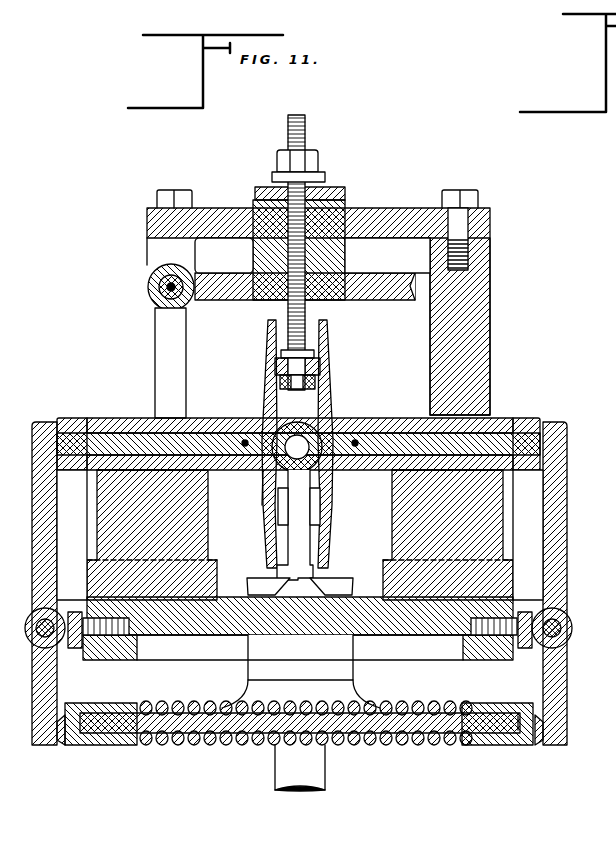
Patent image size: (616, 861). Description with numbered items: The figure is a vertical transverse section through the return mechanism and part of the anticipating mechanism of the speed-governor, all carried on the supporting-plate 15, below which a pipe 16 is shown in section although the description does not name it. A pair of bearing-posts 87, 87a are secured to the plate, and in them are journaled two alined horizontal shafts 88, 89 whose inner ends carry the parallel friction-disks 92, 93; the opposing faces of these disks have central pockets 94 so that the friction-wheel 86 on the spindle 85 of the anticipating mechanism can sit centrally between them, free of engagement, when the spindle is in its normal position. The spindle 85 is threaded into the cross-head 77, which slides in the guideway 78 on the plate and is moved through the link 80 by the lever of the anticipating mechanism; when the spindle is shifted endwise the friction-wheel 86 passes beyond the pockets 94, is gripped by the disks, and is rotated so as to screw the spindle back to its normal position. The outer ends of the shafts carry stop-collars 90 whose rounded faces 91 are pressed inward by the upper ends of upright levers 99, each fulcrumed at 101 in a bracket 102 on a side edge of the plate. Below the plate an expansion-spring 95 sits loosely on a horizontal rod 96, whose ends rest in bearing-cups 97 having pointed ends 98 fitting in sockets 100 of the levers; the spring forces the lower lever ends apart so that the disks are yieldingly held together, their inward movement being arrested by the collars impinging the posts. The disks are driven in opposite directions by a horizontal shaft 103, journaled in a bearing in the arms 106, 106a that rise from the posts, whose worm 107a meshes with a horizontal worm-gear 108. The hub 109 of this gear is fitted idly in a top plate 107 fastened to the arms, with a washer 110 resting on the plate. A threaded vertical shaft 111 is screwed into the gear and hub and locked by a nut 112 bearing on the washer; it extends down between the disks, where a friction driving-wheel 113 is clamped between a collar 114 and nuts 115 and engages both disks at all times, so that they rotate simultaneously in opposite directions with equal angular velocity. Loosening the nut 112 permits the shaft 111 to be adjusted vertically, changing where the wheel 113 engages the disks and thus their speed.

The supporting-plate 15 is at (410, 636).
The pipe 16 is at (312, 778).
The cross-head 77 is at (308, 538).
The guideway 78 is at (258, 582).
The link 80 is at (283, 508).
The spindle 85 is at (300, 420).
The friction-wheel 86 is at (265, 470).
The bearing-post 87 is at (490, 526).
The bearing-post 87a is at (122, 512).
The horizontal shaft 88 is at (497, 418).
The horizontal shaft 89 is at (122, 418).
The stop-collar 90 is at (72, 418).
The rounded end 91 is at (44, 420).
The friction-disk 92 is at (340, 478).
The friction-disk 93 is at (266, 365).
The central pocket 94 is at (258, 420).
The expansion-spring 95 is at (406, 746).
The horizontal rod 96 is at (222, 748).
The bearing-cup 97 is at (110, 740).
The pointed end 98 is at (66, 712).
The lever 99 is at (45, 550).
The socket 100 is at (57, 730).
The fulcrum 101 is at (38, 618).
The bracket 102 is at (76, 648).
The horizontal shaft 103 is at (150, 283).
The arm 106 is at (176, 358).
The arm 106a is at (490, 338).
The top plate 107 is at (397, 212).
The worm 107a is at (160, 272).
The worm-gear 108 is at (392, 300).
The hub 109 is at (350, 250).
The washer 110 is at (338, 192).
The threaded vertical shaft 111 is at (285, 130).
The nut 112 is at (318, 160).
The friction driving-wheel 113 is at (324, 366).
The collar 114 is at (312, 355).
The nut 115 is at (280, 383).